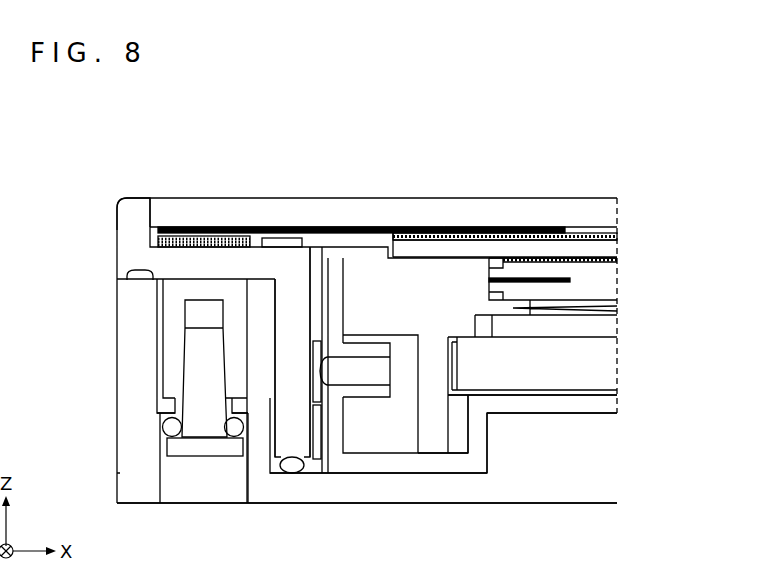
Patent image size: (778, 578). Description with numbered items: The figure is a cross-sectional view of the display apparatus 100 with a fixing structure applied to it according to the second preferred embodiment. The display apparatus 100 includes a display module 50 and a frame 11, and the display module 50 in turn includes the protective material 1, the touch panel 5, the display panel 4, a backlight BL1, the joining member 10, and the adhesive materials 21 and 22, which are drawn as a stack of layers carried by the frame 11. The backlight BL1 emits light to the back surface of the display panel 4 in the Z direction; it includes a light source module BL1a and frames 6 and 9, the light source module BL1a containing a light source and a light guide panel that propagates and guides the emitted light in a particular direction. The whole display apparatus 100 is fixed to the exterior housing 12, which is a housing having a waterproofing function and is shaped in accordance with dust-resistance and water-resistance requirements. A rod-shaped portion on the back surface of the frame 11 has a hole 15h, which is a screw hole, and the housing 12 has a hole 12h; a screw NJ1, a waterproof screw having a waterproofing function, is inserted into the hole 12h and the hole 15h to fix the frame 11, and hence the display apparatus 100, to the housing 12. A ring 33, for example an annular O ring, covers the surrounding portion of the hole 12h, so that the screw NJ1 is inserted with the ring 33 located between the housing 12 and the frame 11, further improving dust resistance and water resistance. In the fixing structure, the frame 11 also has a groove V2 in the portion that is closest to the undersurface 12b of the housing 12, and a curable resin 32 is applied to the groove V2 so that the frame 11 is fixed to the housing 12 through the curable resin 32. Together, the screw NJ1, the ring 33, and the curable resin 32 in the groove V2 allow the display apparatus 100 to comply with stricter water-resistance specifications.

The display apparatus 100 is at (260, 131).
The frame 11 is at (140, 197).
The display module 50 is at (374, 217).
The protective material 1 is at (612, 205).
The adhesive material 21 is at (613, 237).
The touch panel 5 is at (613, 249).
The adhesive material 22 is at (617, 259).
The display panel 4 is at (582, 270).
The frame 6 is at (590, 309).
The light source module BL1a is at (622, 313).
The backlight BL1 is at (580, 384).
The frame 9 is at (567, 432).
The undersurface 12b is at (599, 467).
The joining member 10 is at (150, 237).
The housing 12 is at (117, 306).
The hole 15h is at (182, 317).
The hole 12h is at (166, 409).
The ring 33 is at (163, 425).
The screw NJ1 is at (205, 457).
The groove V2 is at (292, 450).
The curable resin 32 is at (307, 468).